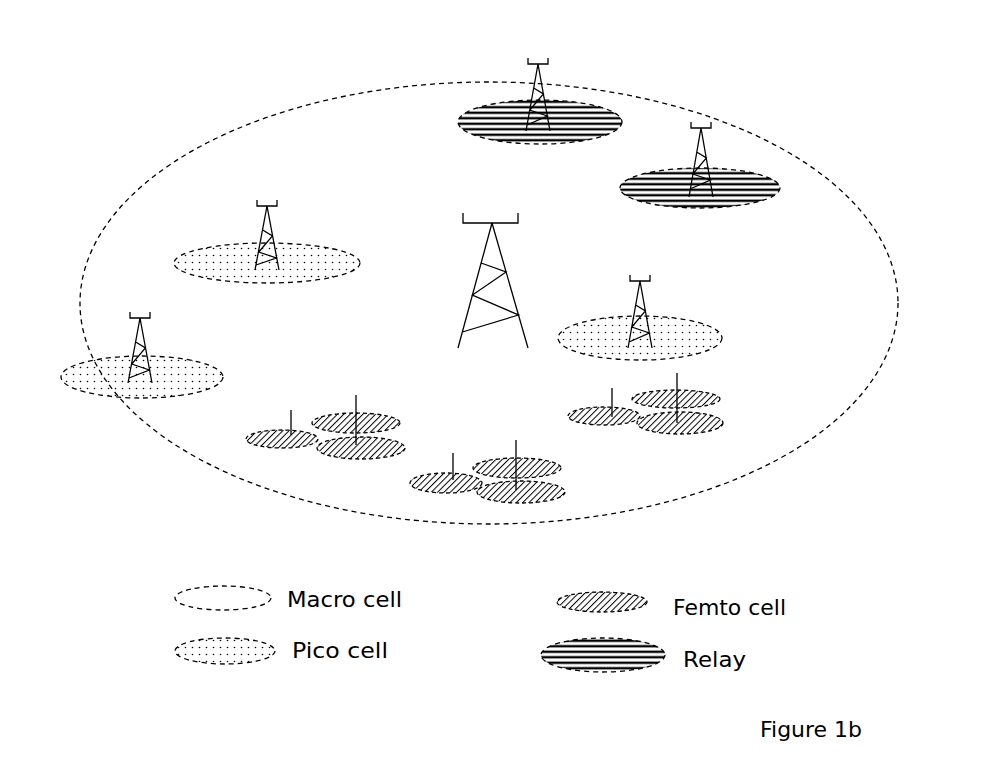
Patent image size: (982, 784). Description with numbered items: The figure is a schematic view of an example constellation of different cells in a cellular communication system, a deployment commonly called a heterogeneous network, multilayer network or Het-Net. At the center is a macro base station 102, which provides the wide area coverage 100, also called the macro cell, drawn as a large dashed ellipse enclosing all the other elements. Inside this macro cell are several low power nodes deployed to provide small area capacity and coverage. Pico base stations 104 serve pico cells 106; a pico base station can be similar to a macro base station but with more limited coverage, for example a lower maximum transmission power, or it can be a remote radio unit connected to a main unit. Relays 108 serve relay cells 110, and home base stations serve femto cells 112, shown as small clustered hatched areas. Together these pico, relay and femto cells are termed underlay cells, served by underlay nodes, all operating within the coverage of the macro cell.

The wide area coverage 100 is at (287, 115).
The macro base station 102 is at (457, 310).
The pico base station 104 is at (277, 232).
The pico cell 106 is at (218, 280).
The relay 108 is at (715, 143).
The home base station 110 is at (707, 210).
The femto cell 112 is at (723, 410).